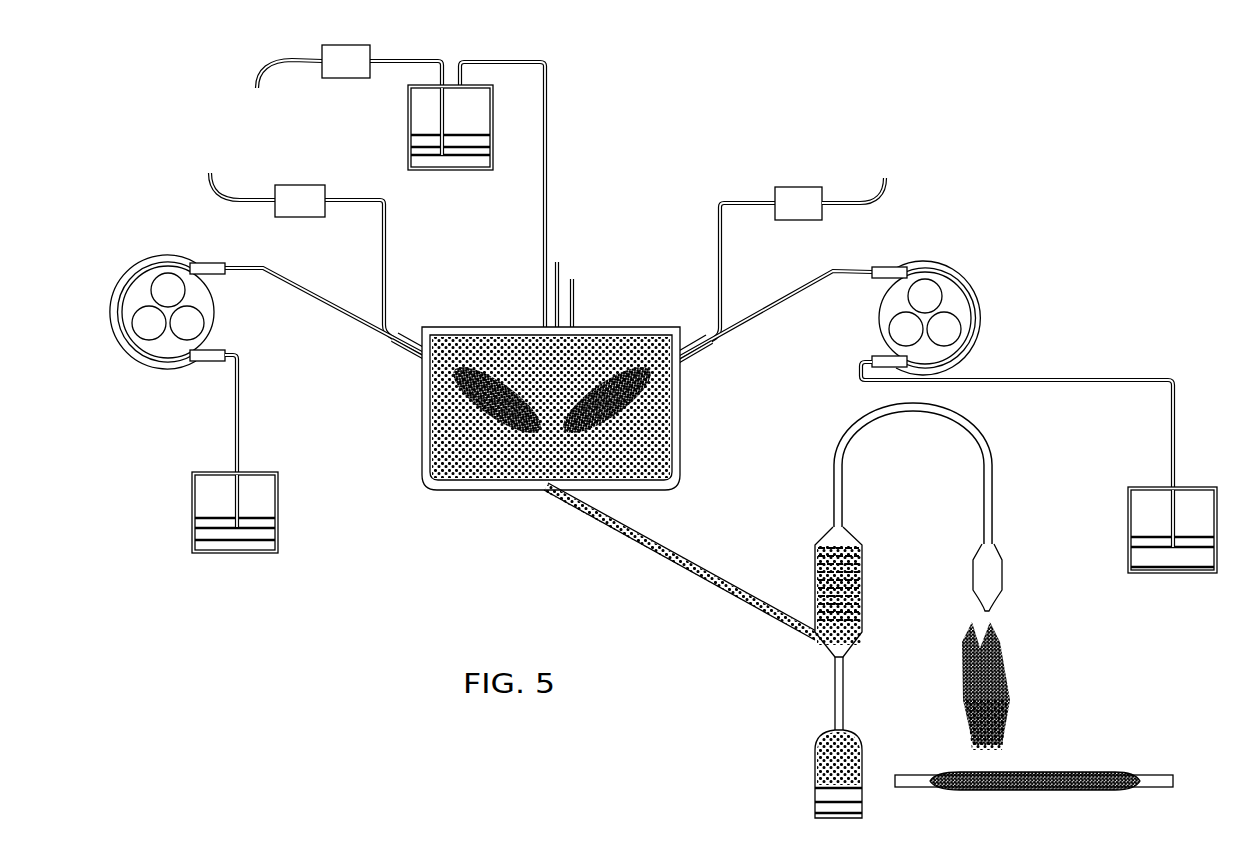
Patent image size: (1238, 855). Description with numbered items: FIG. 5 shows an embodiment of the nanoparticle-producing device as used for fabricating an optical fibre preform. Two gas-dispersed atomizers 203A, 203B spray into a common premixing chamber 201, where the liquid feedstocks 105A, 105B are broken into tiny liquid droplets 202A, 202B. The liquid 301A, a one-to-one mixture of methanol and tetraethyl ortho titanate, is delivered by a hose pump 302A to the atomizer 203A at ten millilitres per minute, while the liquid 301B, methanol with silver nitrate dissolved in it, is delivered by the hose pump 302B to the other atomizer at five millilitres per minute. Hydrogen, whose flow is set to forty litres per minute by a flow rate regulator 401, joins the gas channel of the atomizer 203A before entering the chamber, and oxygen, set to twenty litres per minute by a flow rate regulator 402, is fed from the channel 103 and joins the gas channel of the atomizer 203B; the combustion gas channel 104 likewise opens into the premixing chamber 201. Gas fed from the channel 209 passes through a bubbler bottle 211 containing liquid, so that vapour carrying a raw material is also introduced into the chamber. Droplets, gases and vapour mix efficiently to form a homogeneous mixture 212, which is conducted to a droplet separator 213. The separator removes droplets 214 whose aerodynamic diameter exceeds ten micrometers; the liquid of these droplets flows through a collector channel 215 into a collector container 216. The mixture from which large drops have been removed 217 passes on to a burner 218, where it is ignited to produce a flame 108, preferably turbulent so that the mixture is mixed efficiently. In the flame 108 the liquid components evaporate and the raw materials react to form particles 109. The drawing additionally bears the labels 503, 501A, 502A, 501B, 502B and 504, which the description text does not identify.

The mass flow controller 503 is at (351, 45).
The channel 209 is at (279, 92).
The bubbler bottle 211 is at (493, 122).
The combustion gas channel 104 is at (557, 262).
The channel 103 is at (573, 278).
The gas source 501A is at (227, 174).
The flow rate regulator 401 is at (305, 186).
The gas line 502A is at (386, 252).
The hose pump 302A is at (128, 273).
The liquid feedstock 105A is at (322, 305).
The gas-dispersed atomizer 203A is at (390, 352).
The liquid 301A is at (272, 538).
The premixing chamber 201 is at (447, 332).
The liquid droplets 202A is at (497, 378).
The liquid droplets 202B is at (607, 377).
The homogeneous mixture 212 is at (670, 474).
The gas line 502B is at (715, 243).
The flow rate regulator 402 is at (795, 190).
The gas source 501B is at (874, 177).
The hose pump 302B is at (990, 247).
The liquid feedstock 105B is at (778, 308).
The gas-dispersed atomizer 203B is at (700, 358).
The liquid 301B is at (1135, 556).
The mixture from which large liquid drops are removed 217 is at (990, 440).
The droplet separator 213 is at (822, 537).
The droplets 214 is at (862, 612).
The collector channel 215 is at (833, 712).
The collector container 216 is at (815, 760).
The burner 218 is at (997, 558).
The flame 108 is at (1010, 665).
The particles 109 is at (1008, 748).
The substrate 504 is at (1175, 760).